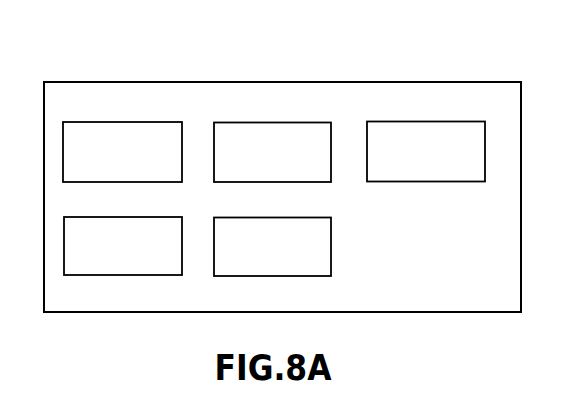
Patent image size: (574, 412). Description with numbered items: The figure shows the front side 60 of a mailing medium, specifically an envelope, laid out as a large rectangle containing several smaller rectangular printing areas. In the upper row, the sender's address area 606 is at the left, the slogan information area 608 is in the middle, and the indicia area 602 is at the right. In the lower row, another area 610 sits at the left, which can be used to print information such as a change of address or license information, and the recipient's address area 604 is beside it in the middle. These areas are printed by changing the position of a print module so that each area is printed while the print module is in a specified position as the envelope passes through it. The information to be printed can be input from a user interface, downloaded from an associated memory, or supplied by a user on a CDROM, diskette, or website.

The front side 60 is at (348, 68).
The indicia area 602 is at (426, 152).
The recipient's address area 604 is at (272, 247).
The sender's address area 606 is at (122, 152).
The slogan information area 608 is at (272, 153).
The other information area 610 is at (123, 246).